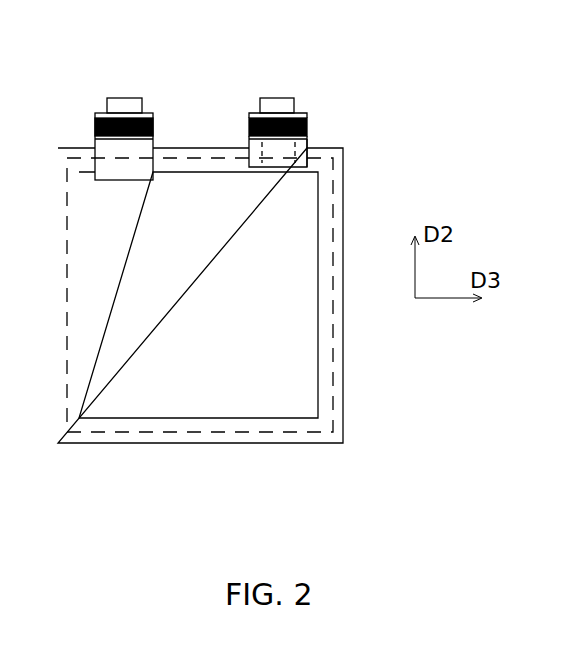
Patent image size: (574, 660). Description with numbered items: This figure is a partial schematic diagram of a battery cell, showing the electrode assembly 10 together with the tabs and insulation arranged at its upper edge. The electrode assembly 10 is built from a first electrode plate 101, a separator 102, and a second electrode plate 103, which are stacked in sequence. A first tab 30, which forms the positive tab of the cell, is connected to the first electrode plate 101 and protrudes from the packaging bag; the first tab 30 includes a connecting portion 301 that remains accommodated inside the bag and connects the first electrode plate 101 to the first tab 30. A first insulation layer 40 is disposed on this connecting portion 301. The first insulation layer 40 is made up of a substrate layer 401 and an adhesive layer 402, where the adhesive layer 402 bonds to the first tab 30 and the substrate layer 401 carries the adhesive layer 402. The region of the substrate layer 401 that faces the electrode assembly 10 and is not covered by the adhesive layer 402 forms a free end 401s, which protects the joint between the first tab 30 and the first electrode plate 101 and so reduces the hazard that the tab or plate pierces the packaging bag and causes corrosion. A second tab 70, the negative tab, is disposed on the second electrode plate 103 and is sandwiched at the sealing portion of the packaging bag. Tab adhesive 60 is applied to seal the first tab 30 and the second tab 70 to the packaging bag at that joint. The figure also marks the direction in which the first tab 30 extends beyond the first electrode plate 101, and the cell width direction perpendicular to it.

The electrode assembly 10 is at (200, 345).
The first electrode plate 101 is at (293, 435).
The separator 102 is at (206, 441).
The second electrode plate 103 is at (280, 500).
The first tab 30 is at (292, 108).
The connecting portion 301 is at (272, 150).
The first insulation layer 40 is at (359, 89).
The substrate layer 401 is at (303, 140).
The free end 401s is at (307, 158).
The adhesive layer 402 is at (307, 119).
The tab adhesive 60 is at (257, 113).
The second tab 70 is at (112, 105).